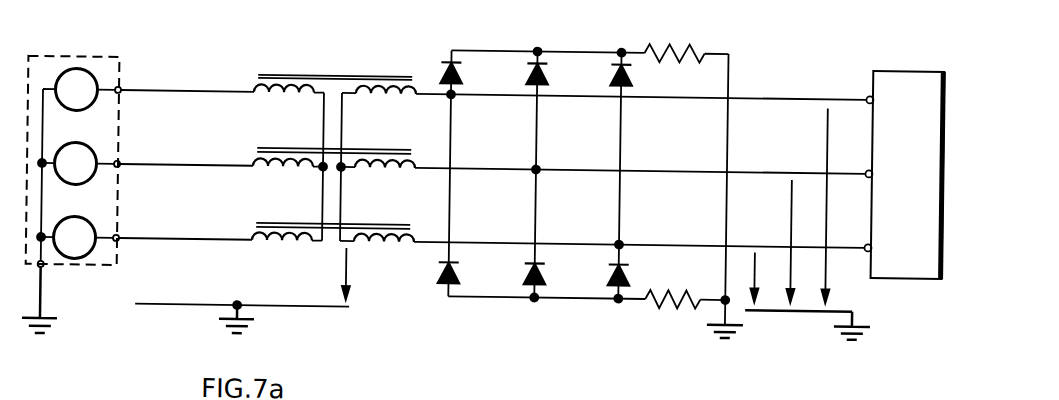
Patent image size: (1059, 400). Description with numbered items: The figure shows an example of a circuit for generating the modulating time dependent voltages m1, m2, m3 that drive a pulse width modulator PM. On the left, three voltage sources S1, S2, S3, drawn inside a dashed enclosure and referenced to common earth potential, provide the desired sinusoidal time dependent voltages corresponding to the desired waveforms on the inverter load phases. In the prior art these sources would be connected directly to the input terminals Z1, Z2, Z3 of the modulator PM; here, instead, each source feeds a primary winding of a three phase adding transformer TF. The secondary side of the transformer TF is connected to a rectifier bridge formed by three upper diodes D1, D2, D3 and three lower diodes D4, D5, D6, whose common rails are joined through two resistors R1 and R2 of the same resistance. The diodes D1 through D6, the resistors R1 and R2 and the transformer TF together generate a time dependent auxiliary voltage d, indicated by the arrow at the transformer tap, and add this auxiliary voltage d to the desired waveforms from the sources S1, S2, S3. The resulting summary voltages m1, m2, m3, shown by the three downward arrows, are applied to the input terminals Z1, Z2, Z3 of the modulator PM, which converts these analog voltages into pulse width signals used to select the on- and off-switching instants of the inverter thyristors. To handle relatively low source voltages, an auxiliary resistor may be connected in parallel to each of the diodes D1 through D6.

The voltage source S1 is at (222, 100).
The voltage source S2 is at (187, 178).
The voltage source S3 is at (150, 250).
The three phase adding transformer TF is at (336, 81).
The time dependent auxiliary voltage d is at (334, 274).
The diode D1 is at (455, 58).
The diode D2 is at (541, 58).
The diode D3 is at (625, 58).
The diode D4 is at (455, 258).
The diode D5 is at (541, 258).
The diode D6 is at (625, 258).
The resistor R1 is at (706, 36).
The resistor R2 is at (682, 300).
The modulating time dependent voltage m1 is at (743, 277).
The modulating time dependent voltage m2 is at (791, 172).
The modulating time dependent voltage m3 is at (826, 110).
The input terminal Z1 is at (866, 86).
The input terminal Z2 is at (866, 162).
The input terminal Z3 is at (866, 236).
The pulse width modulator PM is at (908, 175).